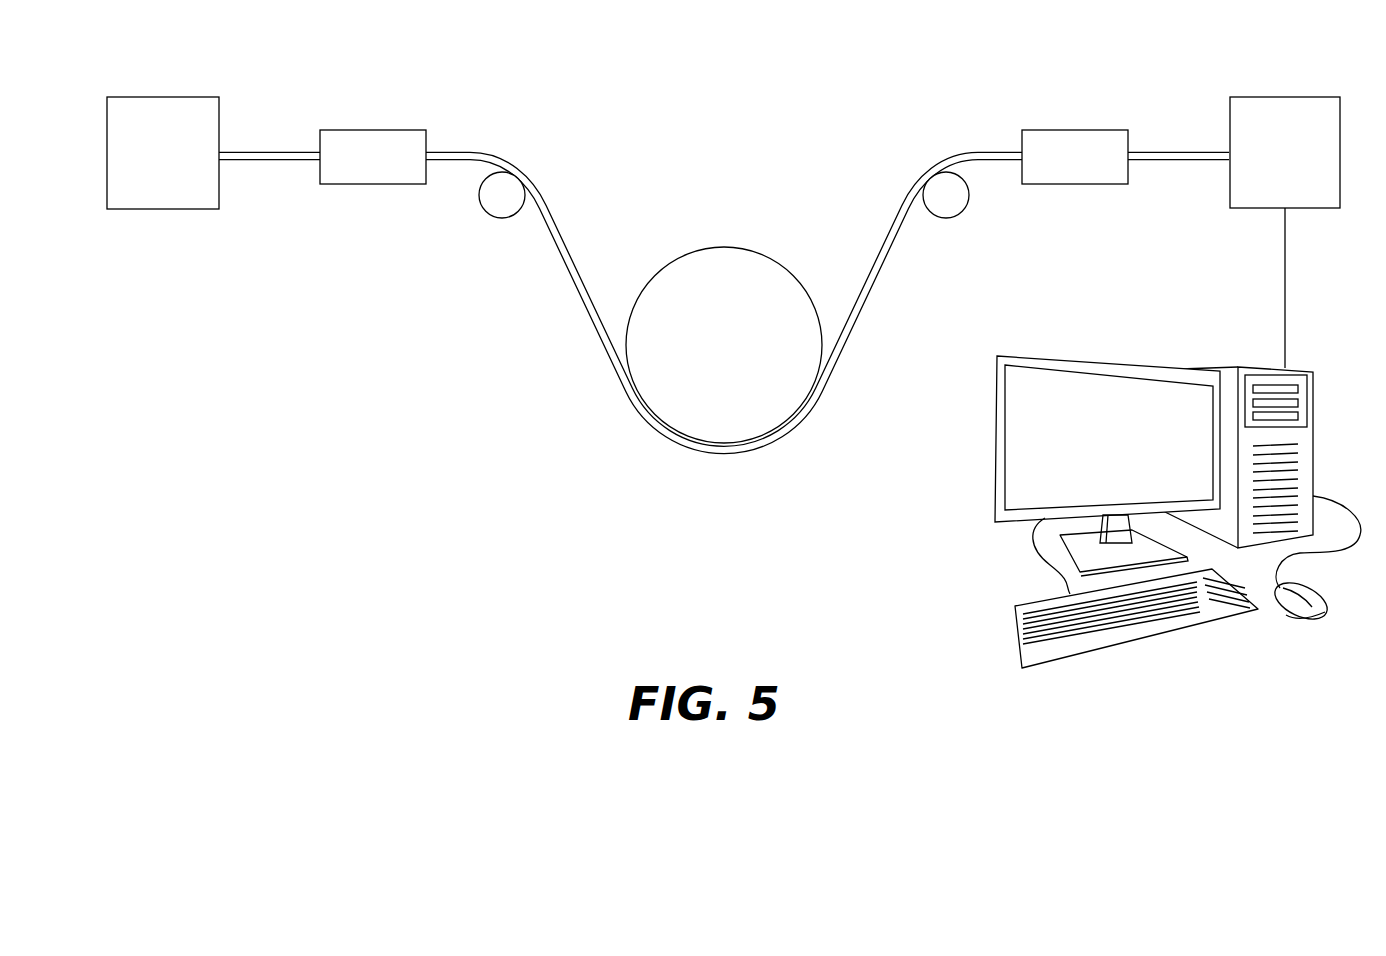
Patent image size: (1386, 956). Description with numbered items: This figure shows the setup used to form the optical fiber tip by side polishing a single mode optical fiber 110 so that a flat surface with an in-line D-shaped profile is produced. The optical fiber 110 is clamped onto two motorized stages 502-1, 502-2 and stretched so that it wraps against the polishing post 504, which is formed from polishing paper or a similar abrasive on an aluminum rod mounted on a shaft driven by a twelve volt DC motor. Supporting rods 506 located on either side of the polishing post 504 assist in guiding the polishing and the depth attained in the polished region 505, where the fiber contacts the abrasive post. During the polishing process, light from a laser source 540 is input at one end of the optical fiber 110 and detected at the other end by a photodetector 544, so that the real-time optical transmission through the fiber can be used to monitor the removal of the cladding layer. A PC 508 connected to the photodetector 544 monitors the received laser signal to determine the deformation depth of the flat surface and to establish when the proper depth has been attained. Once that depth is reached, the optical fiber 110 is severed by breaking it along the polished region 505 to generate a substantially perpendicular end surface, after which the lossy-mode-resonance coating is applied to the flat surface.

The optical fiber 110 is at (580, 288).
The motorized stage 502-1 is at (371, 130).
The motorized stage 502-2 is at (1076, 130).
The polishing post 504 is at (701, 397).
The polished region 505 is at (618, 308).
The supporting rod 506 is at (485, 211).
The PC 508 is at (1222, 367).
The laser source 540 is at (141, 196).
The photodetector 544 is at (1264, 196).